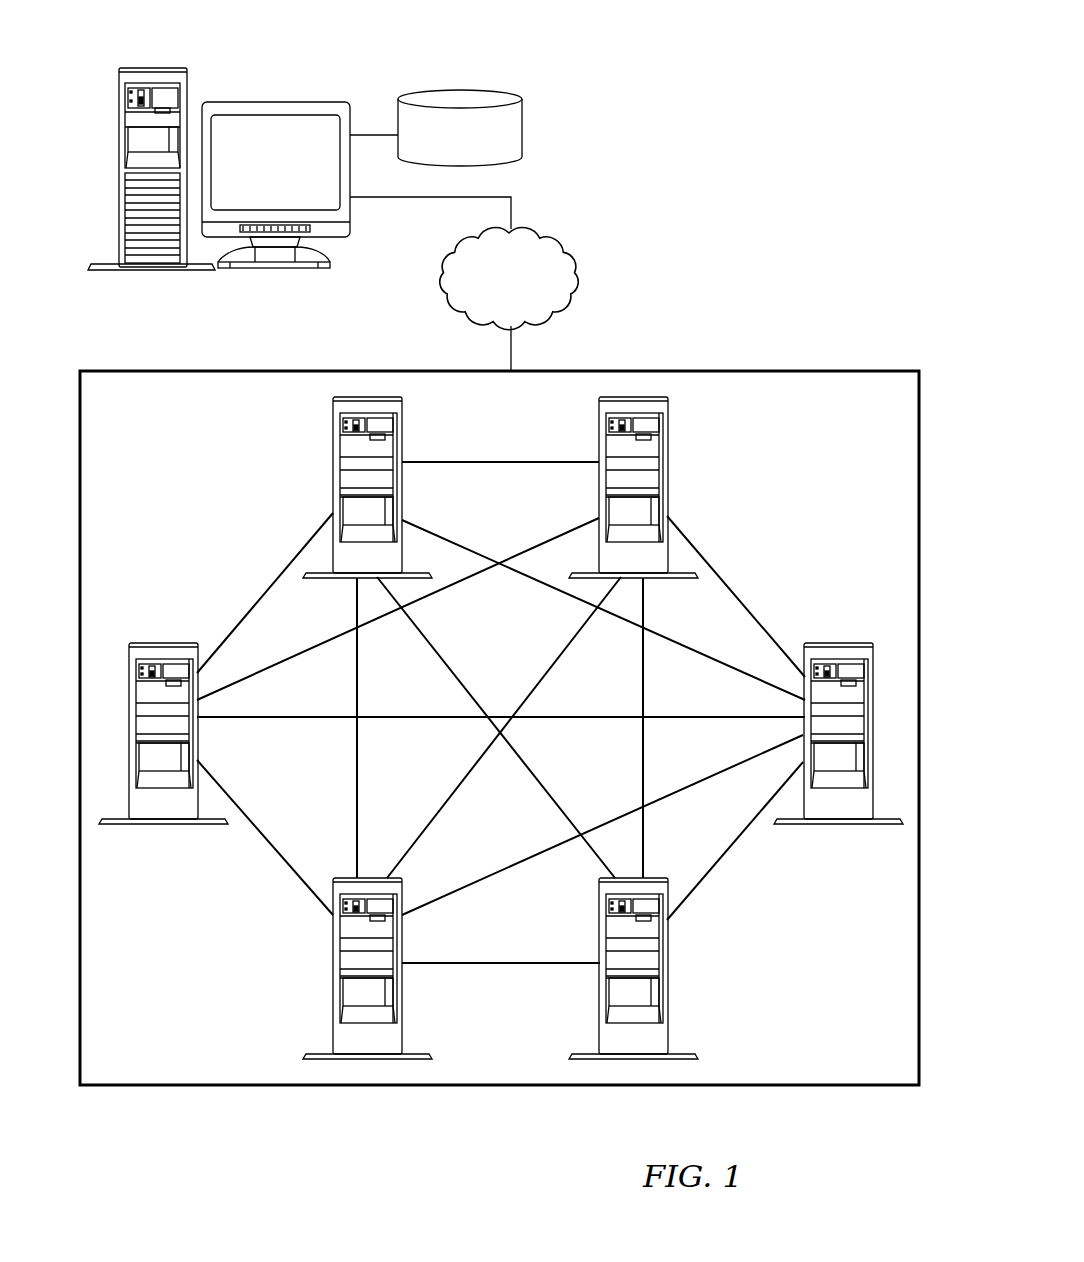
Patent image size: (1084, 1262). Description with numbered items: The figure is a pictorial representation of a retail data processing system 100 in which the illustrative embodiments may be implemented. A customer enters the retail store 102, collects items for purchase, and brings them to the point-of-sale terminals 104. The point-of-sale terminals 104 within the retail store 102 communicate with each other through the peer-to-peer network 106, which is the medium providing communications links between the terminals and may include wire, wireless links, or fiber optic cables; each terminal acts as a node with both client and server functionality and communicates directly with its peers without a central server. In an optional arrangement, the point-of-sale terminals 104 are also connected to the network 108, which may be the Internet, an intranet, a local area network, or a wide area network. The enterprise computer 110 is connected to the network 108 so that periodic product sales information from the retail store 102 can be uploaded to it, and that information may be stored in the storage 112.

The retail data processing system 100 is at (704, 136).
The retail store 102 is at (185, 470).
The point-of-sale terminals 104 is at (97, 1100).
The peer-to-peer network 106 is at (277, 578).
The network 108 is at (544, 231).
The enterprise computer 110 is at (281, 101).
The storage 112 is at (470, 100).